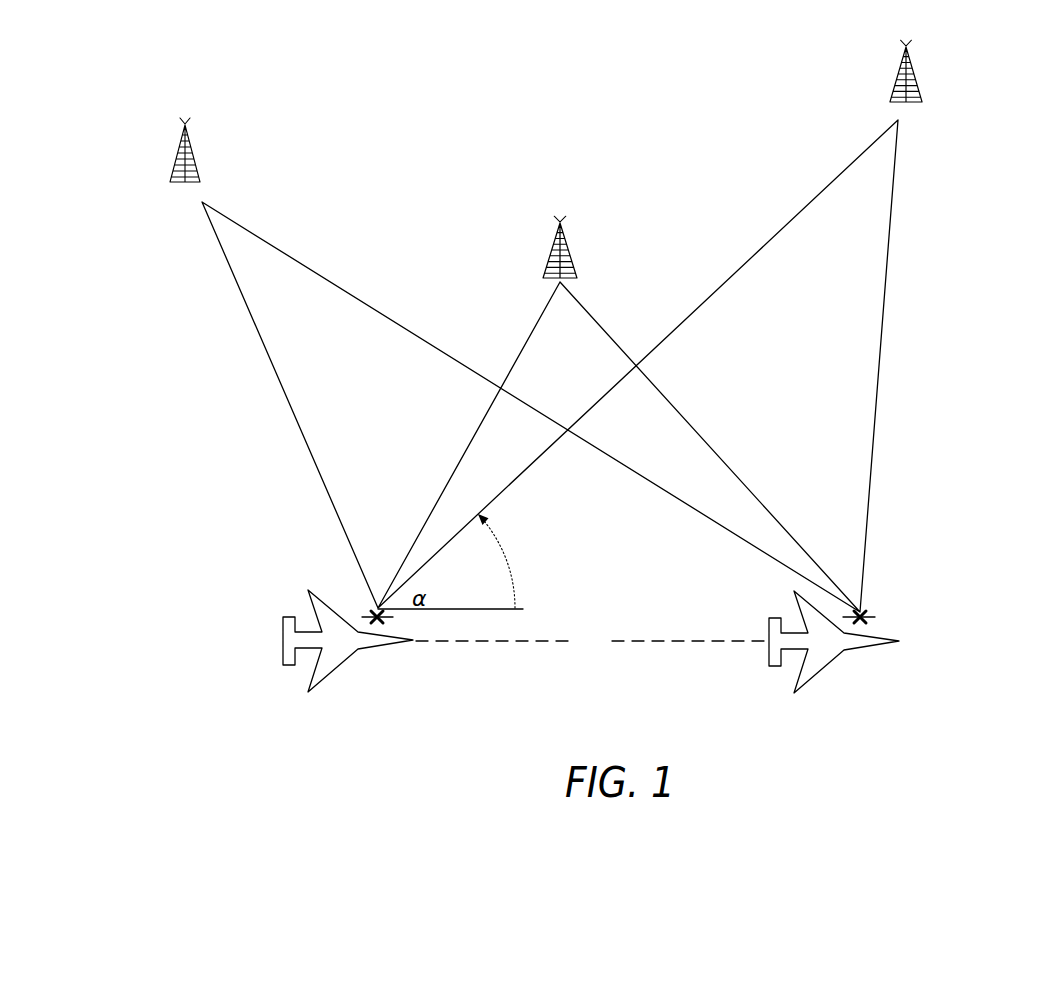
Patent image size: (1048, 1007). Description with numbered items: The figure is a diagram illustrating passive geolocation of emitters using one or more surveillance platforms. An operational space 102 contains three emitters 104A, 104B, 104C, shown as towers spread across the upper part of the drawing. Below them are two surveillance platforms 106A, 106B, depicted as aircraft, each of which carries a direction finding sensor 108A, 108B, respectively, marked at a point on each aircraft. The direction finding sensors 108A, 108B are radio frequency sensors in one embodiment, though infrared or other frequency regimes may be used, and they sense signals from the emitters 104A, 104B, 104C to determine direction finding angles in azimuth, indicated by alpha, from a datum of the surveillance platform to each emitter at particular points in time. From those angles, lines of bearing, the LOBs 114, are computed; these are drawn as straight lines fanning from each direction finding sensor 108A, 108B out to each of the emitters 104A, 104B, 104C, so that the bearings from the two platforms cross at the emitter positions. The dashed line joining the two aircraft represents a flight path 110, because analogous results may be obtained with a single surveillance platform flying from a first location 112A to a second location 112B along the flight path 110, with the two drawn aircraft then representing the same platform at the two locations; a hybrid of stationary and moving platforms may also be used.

The operational space 102 is at (500, 120).
The emitter 104A is at (200, 150).
The emitter 104B is at (578, 247).
The emitter 104C is at (923, 70).
The surveillance platform 106A is at (350, 656).
The surveillance platform 106B is at (837, 665).
The direction finding sensor 108A is at (368, 613).
The direction finding sensor 108B is at (874, 615).
The flight path 110 is at (592, 640).
The first location 112A is at (390, 620).
The second location 112B is at (864, 610).
The LOBs 114 is at (380, 310).